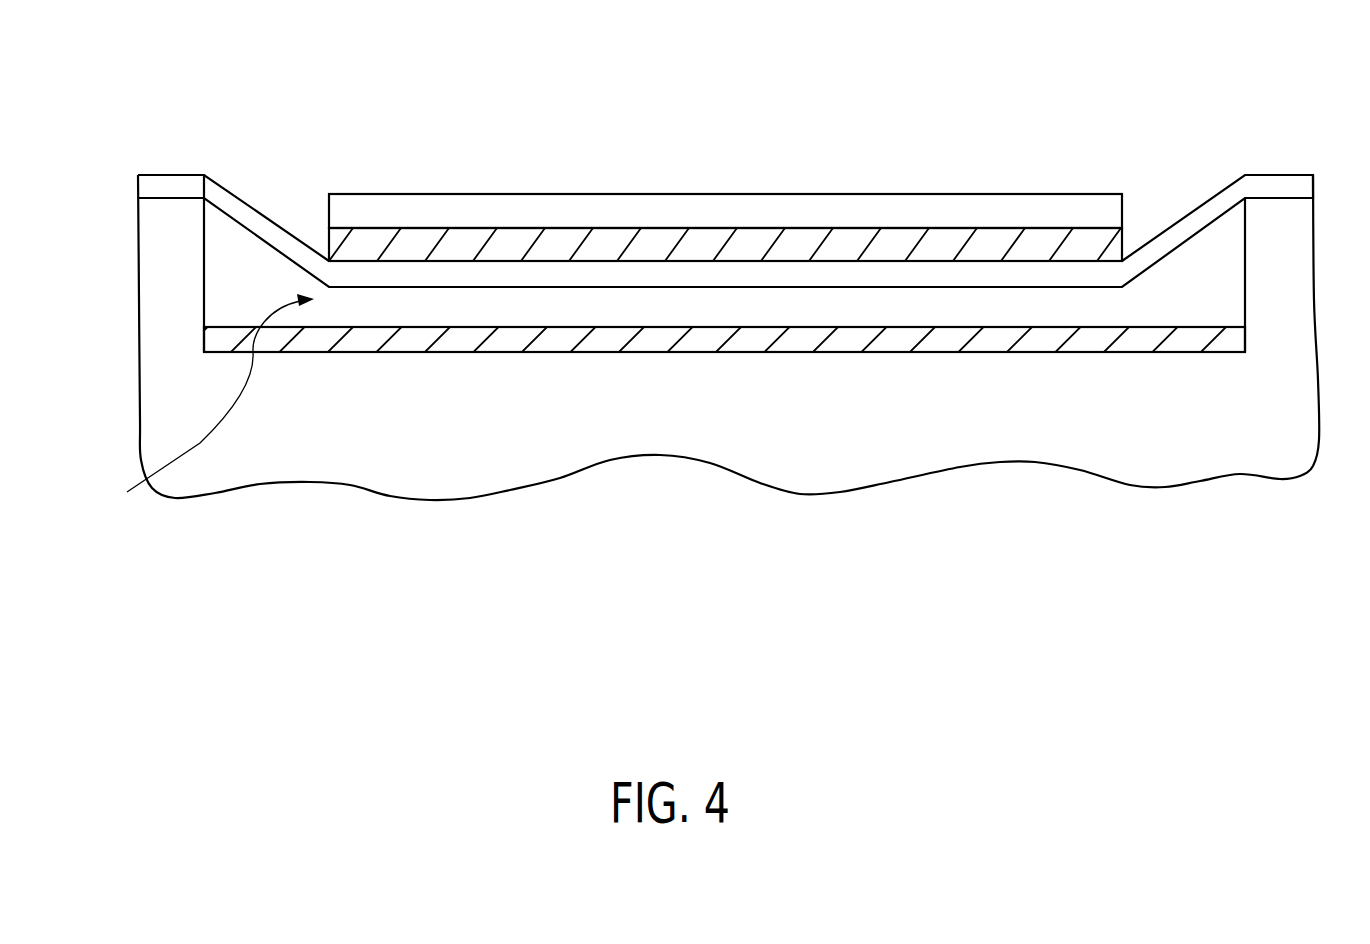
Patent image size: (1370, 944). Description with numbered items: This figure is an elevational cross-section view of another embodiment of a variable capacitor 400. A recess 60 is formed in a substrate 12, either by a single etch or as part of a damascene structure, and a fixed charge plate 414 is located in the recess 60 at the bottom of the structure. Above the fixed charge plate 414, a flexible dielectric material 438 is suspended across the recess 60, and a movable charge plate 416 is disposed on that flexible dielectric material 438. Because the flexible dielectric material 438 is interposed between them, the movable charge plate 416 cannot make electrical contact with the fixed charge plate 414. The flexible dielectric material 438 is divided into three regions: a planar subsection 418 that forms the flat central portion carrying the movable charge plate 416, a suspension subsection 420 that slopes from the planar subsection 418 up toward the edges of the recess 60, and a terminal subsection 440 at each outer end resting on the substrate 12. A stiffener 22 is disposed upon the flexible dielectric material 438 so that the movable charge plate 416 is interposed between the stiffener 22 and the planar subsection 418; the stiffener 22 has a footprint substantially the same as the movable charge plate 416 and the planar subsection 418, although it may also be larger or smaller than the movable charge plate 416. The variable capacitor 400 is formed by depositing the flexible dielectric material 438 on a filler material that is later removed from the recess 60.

The variable capacitor 400 is at (1001, 56).
The substrate 12 is at (726, 400).
The fixed charge plate 414 is at (893, 345).
The recess 60 is at (222, 290).
The flexible dielectric material 438 is at (204, 409).
The suspension subsection 420 is at (245, 215).
The planar subsection 418 is at (440, 277).
The movable charge plate 416 is at (603, 243).
The stiffener 22 is at (733, 207).
The terminal subsection 440 is at (148, 177).